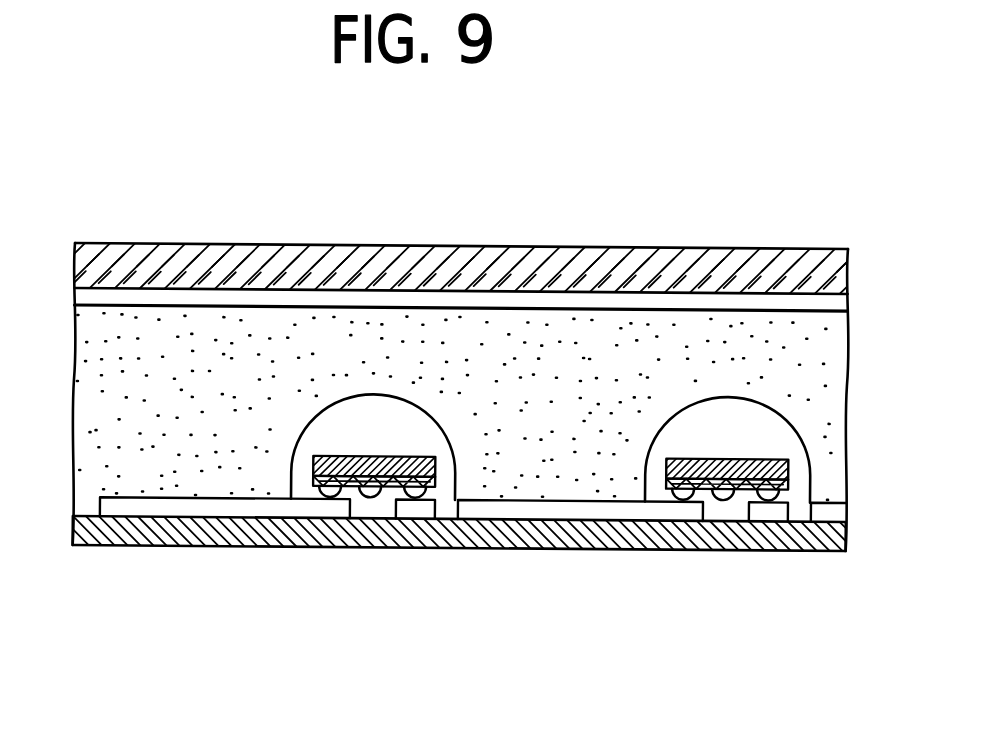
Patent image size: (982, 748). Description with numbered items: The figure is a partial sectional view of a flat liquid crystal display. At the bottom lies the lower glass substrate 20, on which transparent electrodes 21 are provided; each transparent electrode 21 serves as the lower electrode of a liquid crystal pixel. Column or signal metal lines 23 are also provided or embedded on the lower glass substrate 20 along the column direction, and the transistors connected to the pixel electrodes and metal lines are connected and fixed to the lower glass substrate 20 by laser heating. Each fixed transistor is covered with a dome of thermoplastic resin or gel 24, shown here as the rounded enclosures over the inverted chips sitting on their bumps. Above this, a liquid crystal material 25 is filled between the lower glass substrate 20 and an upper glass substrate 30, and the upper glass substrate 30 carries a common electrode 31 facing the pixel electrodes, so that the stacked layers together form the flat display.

The lower glass substrate 20 is at (157, 527).
The transparent electrode 21 is at (588, 508).
The signal metal line 23 is at (417, 508).
The thermoplastic resin or gel 24 is at (372, 408).
The liquid crystal material 25 is at (693, 342).
The upper glass substrate 30 is at (287, 262).
The common electrode 31 is at (508, 300).